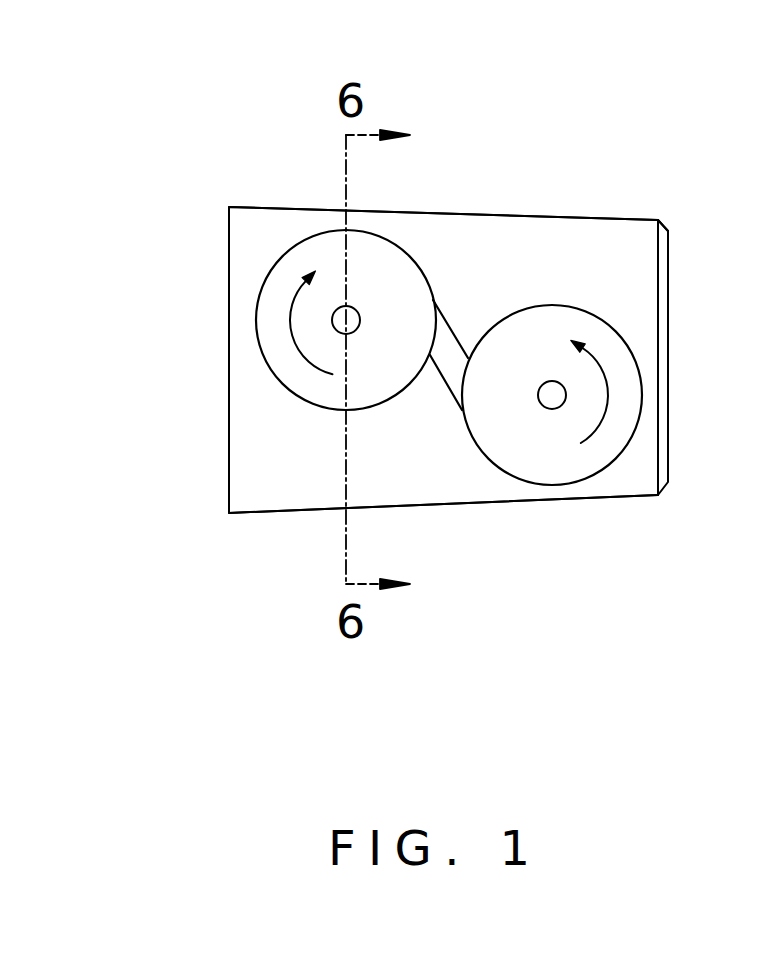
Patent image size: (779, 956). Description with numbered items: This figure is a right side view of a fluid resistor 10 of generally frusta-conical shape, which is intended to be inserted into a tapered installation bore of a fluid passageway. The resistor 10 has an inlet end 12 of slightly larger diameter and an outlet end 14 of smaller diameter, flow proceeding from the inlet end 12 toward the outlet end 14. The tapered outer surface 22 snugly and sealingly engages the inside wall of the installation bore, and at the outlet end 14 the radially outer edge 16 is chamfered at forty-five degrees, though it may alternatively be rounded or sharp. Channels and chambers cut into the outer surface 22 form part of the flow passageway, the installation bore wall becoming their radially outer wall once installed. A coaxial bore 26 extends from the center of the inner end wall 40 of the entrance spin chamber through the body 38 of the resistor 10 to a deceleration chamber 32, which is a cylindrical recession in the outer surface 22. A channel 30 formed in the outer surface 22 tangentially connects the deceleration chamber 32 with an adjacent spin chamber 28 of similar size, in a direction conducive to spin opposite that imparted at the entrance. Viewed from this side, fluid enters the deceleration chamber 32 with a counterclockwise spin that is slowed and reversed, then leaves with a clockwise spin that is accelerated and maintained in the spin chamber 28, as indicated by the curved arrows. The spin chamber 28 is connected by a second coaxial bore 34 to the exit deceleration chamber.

The fluid resistor 10 is at (582, 88).
The inlet end 12 is at (228, 498).
The outlet end 14 is at (670, 462).
The radially outer edge 16 is at (662, 220).
The outer surface 22 is at (278, 500).
The coaxial bore 26 is at (339, 311).
The spin chamber 28 is at (560, 467).
The channel 30 is at (450, 376).
The deceleration chamber 32 is at (303, 373).
The second coaxial bore 34 is at (549, 403).
The body 38 is at (535, 267).
The inner end wall 40 is at (612, 463).